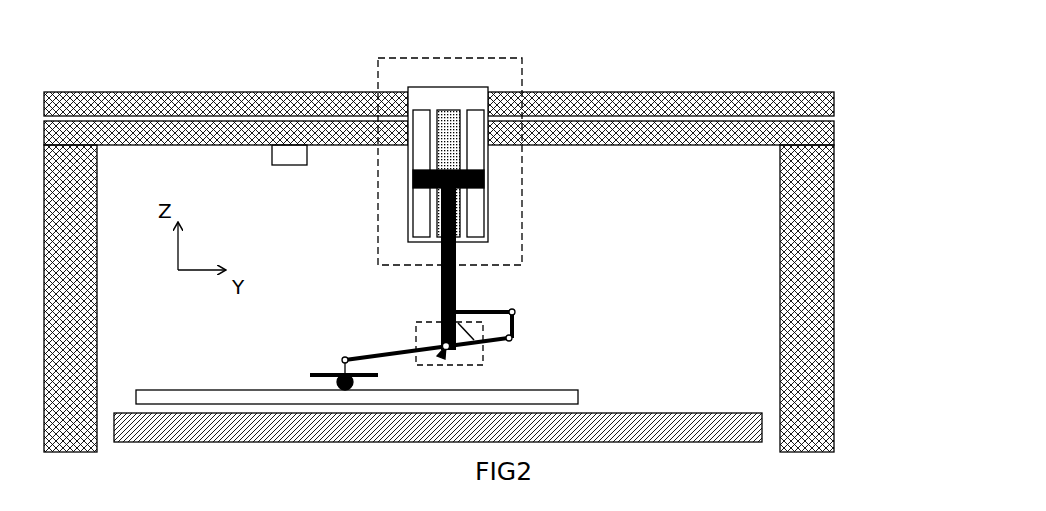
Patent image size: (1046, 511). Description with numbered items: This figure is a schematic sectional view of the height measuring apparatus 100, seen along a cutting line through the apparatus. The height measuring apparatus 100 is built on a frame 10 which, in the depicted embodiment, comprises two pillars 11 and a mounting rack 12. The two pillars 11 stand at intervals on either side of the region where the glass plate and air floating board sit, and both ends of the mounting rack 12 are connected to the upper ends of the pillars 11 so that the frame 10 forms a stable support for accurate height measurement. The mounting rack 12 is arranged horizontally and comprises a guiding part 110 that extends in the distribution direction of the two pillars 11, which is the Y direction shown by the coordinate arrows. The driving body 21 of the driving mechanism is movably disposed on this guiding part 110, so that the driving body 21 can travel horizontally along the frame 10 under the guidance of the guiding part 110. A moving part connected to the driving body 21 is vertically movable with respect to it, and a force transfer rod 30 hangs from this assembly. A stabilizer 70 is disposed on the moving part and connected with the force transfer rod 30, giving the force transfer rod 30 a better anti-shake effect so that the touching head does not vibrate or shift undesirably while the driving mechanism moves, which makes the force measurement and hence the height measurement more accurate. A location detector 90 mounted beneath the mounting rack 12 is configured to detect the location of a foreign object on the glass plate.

The height measuring apparatus 100 is at (489, 234).
The frame 10 is at (489, 272).
The pillars 11 is at (817, 192).
The mounting rack 12 is at (817, 135).
The guiding part 110 is at (573, 117).
The driving body 21 is at (522, 192).
The location detector 90 is at (288, 158).
The stabilizer 70 is at (415, 332).
The force transfer rod 30 is at (500, 345).